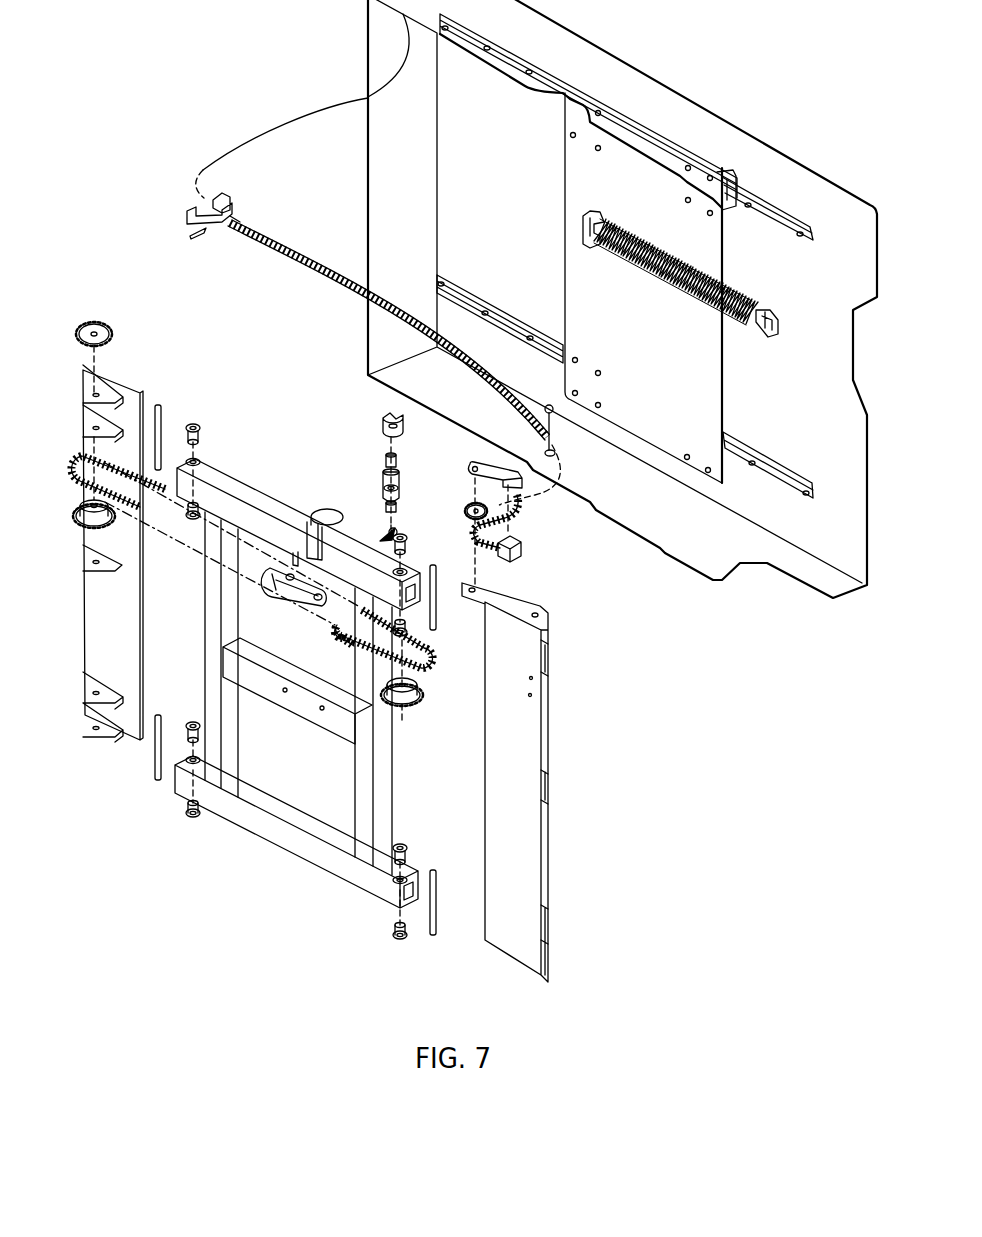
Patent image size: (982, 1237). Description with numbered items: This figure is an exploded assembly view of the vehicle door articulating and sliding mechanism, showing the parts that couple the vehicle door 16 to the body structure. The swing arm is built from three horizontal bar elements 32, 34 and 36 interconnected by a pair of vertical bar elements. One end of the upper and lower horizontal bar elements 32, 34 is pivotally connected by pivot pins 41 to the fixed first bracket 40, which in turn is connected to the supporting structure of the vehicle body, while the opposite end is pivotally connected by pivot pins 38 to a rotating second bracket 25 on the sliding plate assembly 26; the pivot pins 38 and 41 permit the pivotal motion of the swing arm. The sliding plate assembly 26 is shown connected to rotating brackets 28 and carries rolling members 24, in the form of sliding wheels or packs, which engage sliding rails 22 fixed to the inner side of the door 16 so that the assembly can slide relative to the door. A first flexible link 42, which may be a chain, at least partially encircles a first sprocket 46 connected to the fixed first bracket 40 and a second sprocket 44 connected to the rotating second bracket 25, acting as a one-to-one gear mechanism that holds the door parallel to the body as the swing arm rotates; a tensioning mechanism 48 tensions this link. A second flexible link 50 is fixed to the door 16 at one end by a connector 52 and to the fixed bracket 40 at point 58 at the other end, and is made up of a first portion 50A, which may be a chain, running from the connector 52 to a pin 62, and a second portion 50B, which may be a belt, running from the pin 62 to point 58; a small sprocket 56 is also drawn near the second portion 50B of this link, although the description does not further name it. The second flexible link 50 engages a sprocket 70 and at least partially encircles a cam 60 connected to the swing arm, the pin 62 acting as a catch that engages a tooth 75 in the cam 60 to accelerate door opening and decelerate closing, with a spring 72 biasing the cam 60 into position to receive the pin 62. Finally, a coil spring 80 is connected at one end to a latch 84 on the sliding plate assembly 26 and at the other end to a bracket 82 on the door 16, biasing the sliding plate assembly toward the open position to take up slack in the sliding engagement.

The vehicle door 16 is at (625, 64).
The sliding rails 22 is at (780, 232).
The rolling members 24 is at (735, 165).
The rotating second bracket 25 is at (108, 608).
The sliding plate assembly 26 is at (565, 300).
The rotating brackets 28 is at (80, 400).
The upper horizontal bar element 32 is at (258, 497).
The lower horizontal bar element 34 is at (285, 837).
The horizontal bar element 36 is at (275, 695).
The pivot pins 38 is at (161, 418).
The fixed first bracket 40 is at (508, 952).
The pivot pins 41 is at (435, 575).
The first flexible link 42 is at (428, 663).
The second sprocket 44 is at (115, 518).
The first sprocket 46 is at (425, 708).
The tensioning mechanism 48 is at (275, 572).
The second flexible link 50 is at (287, 238).
The first portion 50A is at (240, 235).
The second portion 50B is at (520, 515).
The connector 52 is at (220, 207).
The idler sprocket 56 is at (470, 500).
The point 58 is at (525, 555).
The cam 60 is at (382, 422).
The pin 62 is at (545, 455).
The sprocket 70 is at (111, 328).
The spring 72 is at (388, 530).
The tooth 75 is at (390, 415).
The coil spring 80 is at (742, 325).
The bracket 82 is at (772, 335).
The latch 84 is at (590, 246).